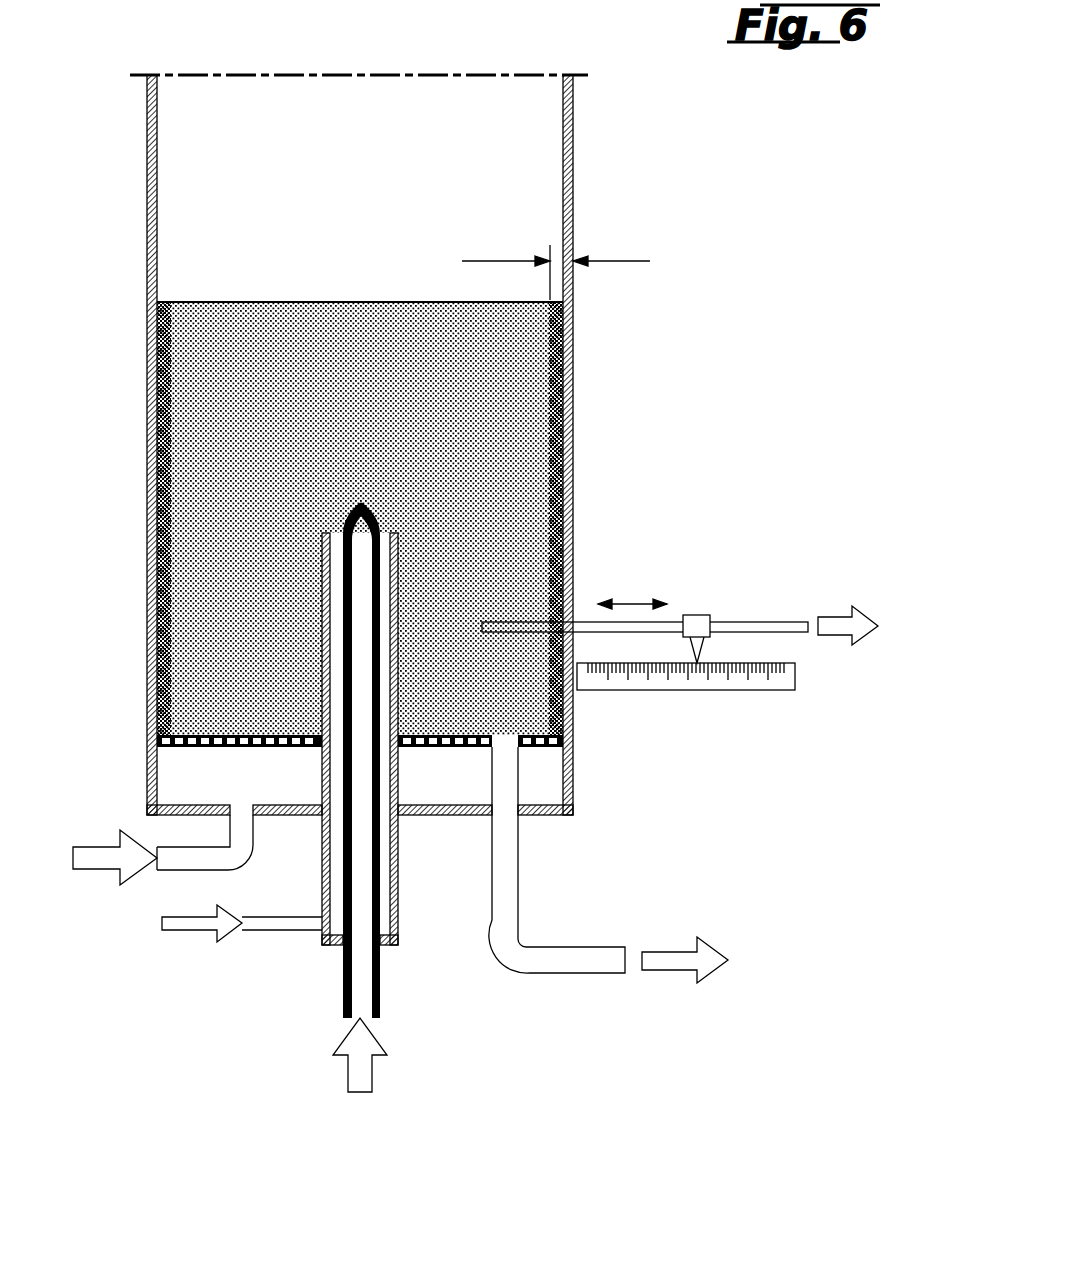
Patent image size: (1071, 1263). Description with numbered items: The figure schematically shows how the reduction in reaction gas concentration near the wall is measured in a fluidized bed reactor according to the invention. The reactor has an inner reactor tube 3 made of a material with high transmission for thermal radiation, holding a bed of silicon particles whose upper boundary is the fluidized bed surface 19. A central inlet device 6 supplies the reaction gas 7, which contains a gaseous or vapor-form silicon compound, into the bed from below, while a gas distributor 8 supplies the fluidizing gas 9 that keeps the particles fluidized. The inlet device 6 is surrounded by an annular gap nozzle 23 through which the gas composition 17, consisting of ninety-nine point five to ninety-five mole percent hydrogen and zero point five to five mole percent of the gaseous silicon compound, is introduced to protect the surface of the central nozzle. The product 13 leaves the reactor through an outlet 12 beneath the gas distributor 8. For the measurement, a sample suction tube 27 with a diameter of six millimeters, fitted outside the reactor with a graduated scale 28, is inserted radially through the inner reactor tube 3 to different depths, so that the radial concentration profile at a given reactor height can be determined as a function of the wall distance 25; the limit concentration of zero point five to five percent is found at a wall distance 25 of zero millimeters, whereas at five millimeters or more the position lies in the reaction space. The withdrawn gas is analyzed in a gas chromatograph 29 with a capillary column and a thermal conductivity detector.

The inner reactor tube 3 is at (572, 390).
The inlet device 6 is at (350, 503).
The reaction gas 7 is at (362, 1072).
The gas distributor 8 is at (250, 735).
The fluidizing gas 9 is at (110, 857).
The outlet 12 is at (507, 843).
The product 13 is at (663, 962).
The gas composition 17 is at (198, 925).
The fluidized bed surface 19 is at (338, 300).
The annular gap nozzle 23 is at (337, 588).
The wall distance 25 is at (560, 252).
The sample suction tube 27 is at (515, 622).
The graduated scale 28 is at (657, 690).
The gas chromatograph 29 is at (868, 625).